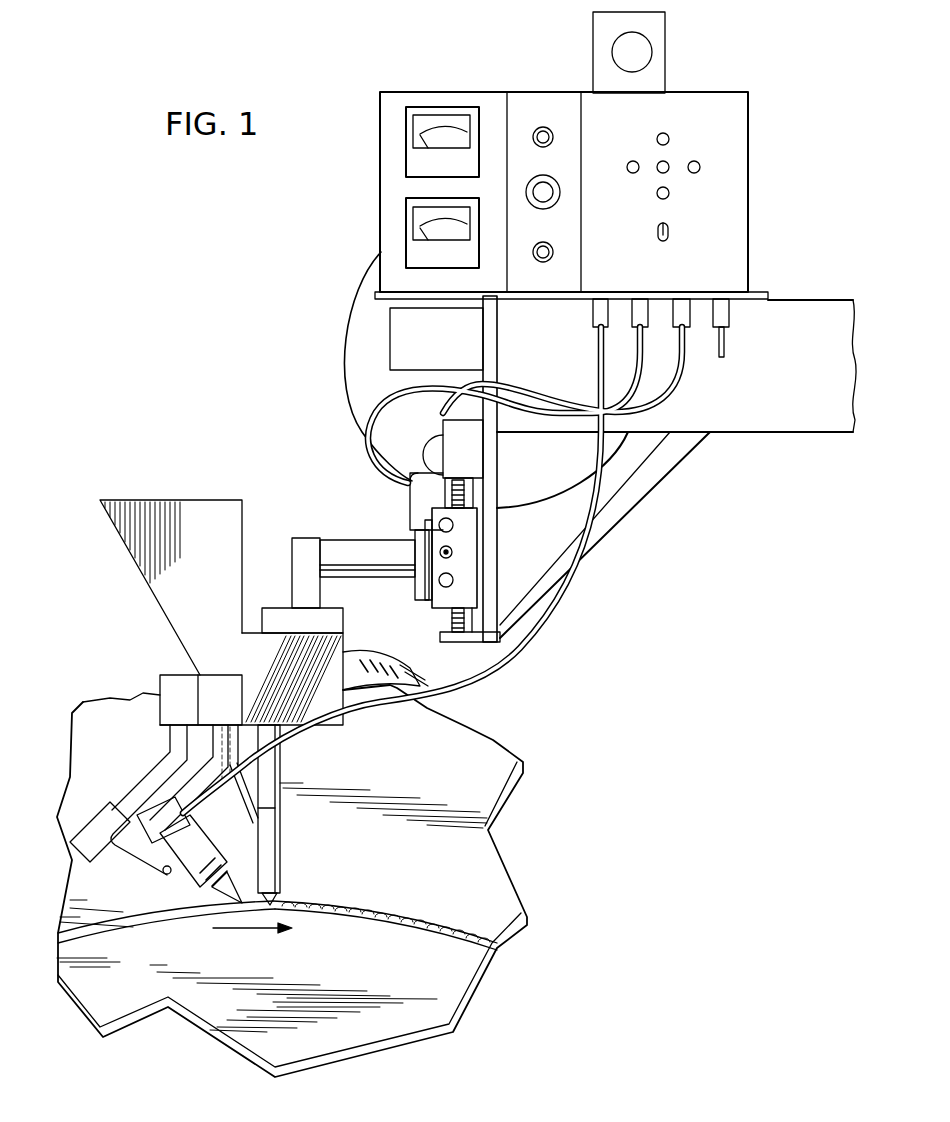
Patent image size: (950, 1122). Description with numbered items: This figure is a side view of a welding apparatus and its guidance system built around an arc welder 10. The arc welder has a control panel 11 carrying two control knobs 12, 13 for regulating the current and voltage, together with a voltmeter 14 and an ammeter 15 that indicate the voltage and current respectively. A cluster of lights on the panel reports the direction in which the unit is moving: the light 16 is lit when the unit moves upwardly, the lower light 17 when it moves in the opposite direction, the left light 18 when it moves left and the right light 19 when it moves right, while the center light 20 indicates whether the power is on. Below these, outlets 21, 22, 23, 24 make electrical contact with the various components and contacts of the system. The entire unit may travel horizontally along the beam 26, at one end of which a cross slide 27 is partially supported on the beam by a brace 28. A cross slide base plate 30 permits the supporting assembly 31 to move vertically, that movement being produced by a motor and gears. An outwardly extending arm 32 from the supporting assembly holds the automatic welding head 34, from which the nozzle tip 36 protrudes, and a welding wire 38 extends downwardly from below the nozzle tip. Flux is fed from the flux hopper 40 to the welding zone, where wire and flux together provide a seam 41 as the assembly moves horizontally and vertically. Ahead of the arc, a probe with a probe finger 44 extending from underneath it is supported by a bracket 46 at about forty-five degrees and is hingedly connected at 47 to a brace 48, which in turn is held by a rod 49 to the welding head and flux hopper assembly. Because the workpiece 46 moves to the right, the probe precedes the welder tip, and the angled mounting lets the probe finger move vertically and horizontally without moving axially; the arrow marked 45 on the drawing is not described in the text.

The arc welder 10 is at (758, 199).
The control panel 11 is at (525, 97).
The control knob 12 is at (556, 118).
The control knob 13 is at (547, 243).
The voltmeter 14 is at (424, 118).
The ammeter 15 is at (413, 208).
The light 16 is at (668, 133).
The lower light 17 is at (670, 193).
The left light 18 is at (628, 160).
The right light 19 is at (700, 166).
The center light 20 is at (668, 166).
The outlet 21 is at (603, 297).
The outlet 22 is at (637, 297).
The outlet 23 is at (682, 297).
The outlet 24 is at (722, 297).
The beam 26 is at (805, 434).
The cross slide 27 is at (493, 478).
The brace 28 is at (648, 507).
The cross slide base plate 30 is at (478, 508).
The supporting assembly 31 is at (468, 592).
The outwardly extending arm 32 is at (350, 545).
The automatic welding head 34 is at (278, 640).
The nozzle tip 36 is at (275, 828).
The welding wire 38 is at (275, 902).
The flux hopper 40 is at (213, 507).
The seam 41 is at (440, 930).
The probe finger 44 is at (230, 897).
The direction of feed 45 is at (191, 887).
The bracket 46 is at (203, 843).
The hinged connection 47 is at (165, 875).
The brace 48 is at (112, 853).
The rod 49 is at (153, 777).